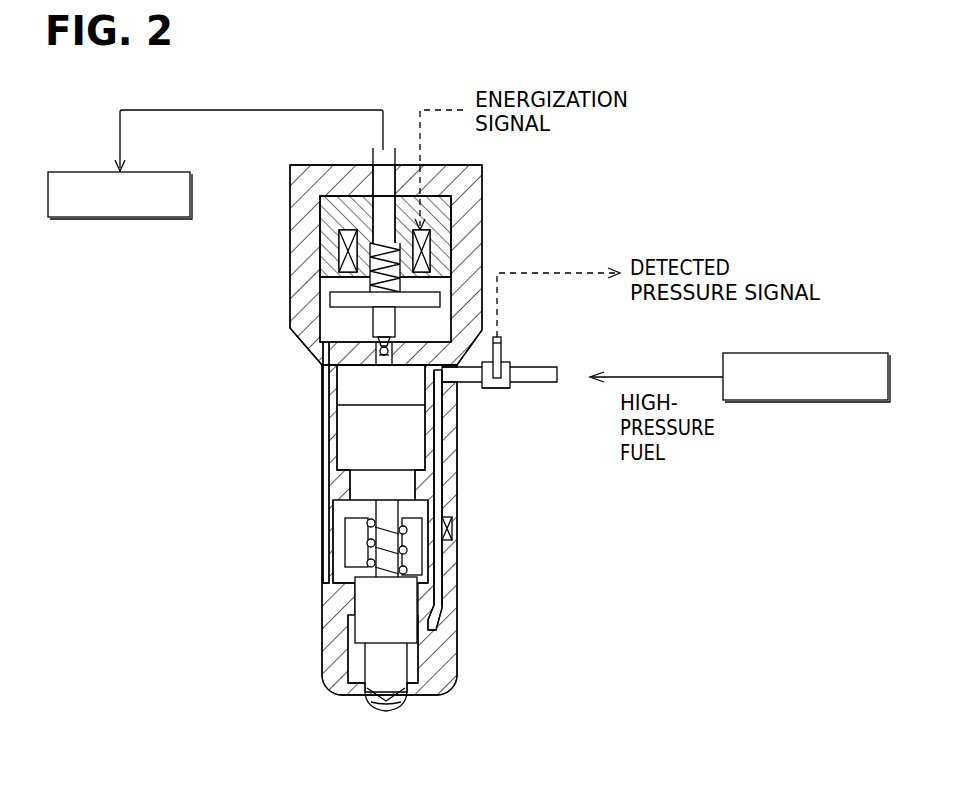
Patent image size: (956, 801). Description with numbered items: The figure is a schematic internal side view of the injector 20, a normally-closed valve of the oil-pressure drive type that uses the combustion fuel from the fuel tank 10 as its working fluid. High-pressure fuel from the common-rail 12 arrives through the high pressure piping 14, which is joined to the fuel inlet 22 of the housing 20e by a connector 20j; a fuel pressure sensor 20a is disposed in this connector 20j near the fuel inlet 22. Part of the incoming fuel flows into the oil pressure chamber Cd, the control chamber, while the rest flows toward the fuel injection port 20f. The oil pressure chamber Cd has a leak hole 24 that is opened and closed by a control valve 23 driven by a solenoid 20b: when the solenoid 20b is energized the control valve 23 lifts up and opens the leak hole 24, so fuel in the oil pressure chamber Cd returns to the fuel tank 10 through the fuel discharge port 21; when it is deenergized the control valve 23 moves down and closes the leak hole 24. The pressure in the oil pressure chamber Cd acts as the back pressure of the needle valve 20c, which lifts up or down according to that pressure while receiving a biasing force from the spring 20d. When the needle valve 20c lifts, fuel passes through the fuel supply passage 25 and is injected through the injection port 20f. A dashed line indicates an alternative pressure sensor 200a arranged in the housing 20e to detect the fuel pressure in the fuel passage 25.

The fuel tank 10 is at (88, 171).
The common-rail 12 is at (820, 353).
The high pressure piping 14 is at (557, 385).
The injector 20 is at (568, 196).
The fuel pressure sensor 20a is at (505, 350).
The solenoid 20b is at (340, 245).
The needle valve 20c is at (358, 607).
The spring 20d is at (365, 545).
The housing 20e is at (483, 243).
The fuel injection port 20f is at (396, 701).
The connector 20j is at (506, 390).
The fuel discharge port 21 is at (390, 148).
The fuel inlet 22 is at (450, 398).
The control valve 23 is at (385, 322).
The leak hole 24 is at (382, 341).
The fuel supply passage 25 is at (446, 598).
The pressure sensor 200a is at (453, 529).
The oil pressure chamber Cd is at (344, 398).